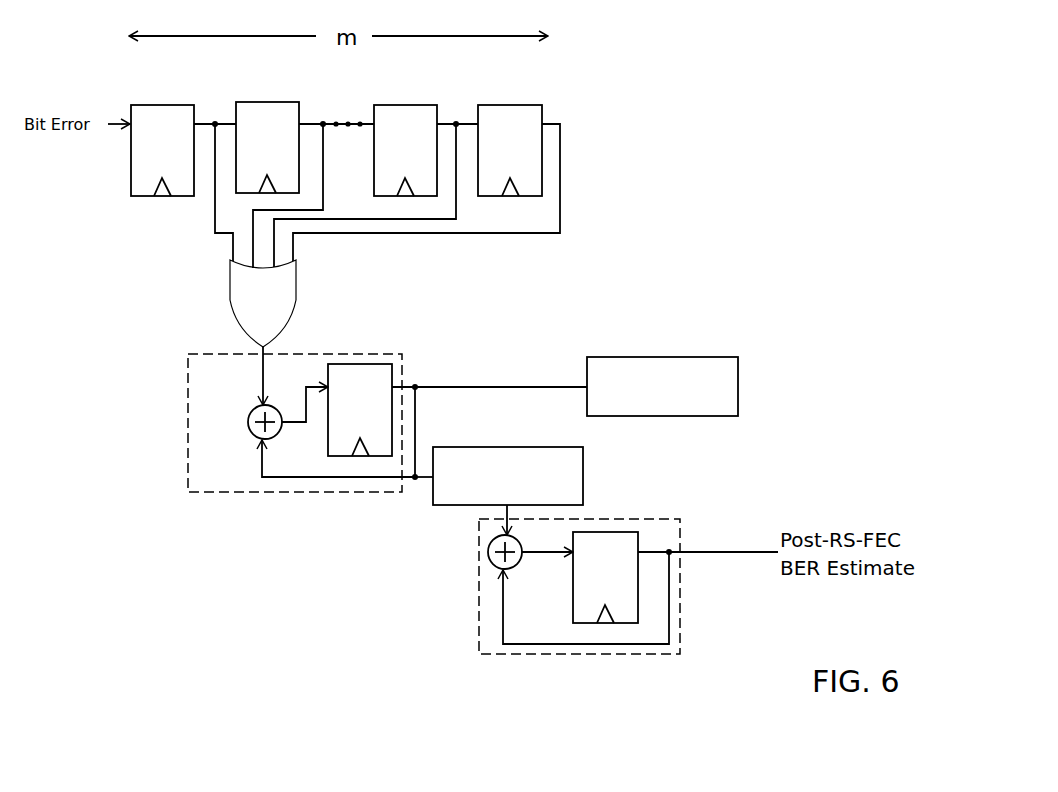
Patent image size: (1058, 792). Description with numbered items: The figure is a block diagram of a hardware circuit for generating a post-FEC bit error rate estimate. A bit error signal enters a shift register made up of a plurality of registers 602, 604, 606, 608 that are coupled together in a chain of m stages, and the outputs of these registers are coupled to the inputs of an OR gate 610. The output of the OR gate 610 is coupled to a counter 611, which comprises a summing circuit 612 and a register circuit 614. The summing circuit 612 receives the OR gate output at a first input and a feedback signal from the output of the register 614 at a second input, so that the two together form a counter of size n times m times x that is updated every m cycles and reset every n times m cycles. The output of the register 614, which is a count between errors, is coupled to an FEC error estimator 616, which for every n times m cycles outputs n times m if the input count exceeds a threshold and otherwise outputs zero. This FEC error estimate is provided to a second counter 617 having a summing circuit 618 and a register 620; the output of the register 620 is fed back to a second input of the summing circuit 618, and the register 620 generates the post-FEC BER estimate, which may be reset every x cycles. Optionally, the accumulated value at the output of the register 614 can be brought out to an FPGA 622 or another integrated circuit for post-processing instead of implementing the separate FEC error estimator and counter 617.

The register 602 is at (177, 104).
The register 604 is at (287, 101).
The register 606 is at (407, 104).
The register 608 is at (520, 104).
The OR gate 610 is at (230, 300).
The counter 611 is at (240, 490).
The summing circuit 612 is at (248, 435).
The register circuit 614 is at (370, 363).
The FEC error estimator 616 is at (473, 506).
The counter 617 is at (480, 623).
The summing circuit 618 is at (488, 565).
The register 620 is at (620, 517).
The FPGA 622 is at (665, 416).